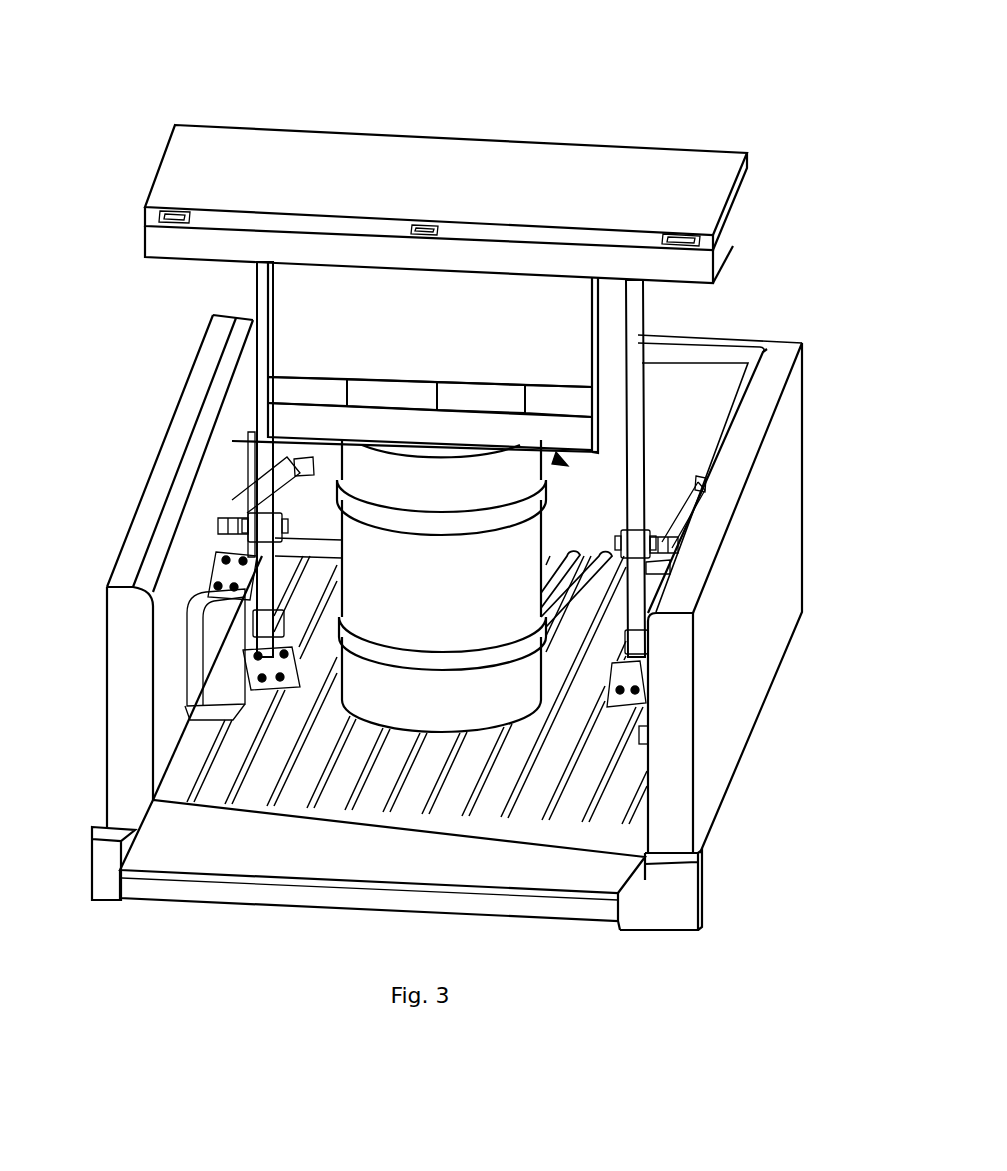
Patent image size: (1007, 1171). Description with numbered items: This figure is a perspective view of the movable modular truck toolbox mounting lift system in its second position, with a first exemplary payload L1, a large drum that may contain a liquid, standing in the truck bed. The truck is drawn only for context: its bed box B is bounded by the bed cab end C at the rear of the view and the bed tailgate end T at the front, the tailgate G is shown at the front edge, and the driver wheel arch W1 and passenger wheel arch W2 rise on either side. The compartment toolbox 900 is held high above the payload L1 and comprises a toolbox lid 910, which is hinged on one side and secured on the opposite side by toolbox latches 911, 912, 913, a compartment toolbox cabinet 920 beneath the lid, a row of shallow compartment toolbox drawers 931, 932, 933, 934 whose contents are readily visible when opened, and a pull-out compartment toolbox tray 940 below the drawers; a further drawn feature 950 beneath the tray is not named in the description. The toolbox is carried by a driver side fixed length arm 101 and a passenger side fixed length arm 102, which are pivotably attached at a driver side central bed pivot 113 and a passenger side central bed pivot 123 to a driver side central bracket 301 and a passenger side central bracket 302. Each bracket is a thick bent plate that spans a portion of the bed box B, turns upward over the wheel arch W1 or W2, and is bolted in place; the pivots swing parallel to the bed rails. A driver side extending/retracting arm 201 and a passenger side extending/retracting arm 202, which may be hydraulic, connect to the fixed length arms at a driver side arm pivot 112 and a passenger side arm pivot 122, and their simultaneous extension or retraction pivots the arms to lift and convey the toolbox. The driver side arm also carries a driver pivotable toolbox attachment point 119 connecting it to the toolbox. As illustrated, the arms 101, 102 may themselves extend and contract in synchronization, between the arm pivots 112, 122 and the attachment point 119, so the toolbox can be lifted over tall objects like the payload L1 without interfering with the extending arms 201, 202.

The compartment toolbox 900 is at (575, 140).
The toolbox lid 910 is at (333, 145).
The toolbox latch 911 is at (160, 217).
The toolbox latch 912 is at (423, 222).
The toolbox latch 913 is at (695, 240).
The compartment toolbox cabinet 920 is at (415, 358).
The compartment toolbox drawer 931 is at (295, 387).
The compartment toolbox drawer 932 is at (365, 395).
The compartment toolbox drawer 933 is at (470, 400).
The compartment toolbox drawer 934 is at (557, 405).
The compartment toolbox tray 940 is at (430, 223).
The lower bracket 950 is at (563, 462).
The driver side fixed length arm 101 is at (257, 300).
The passenger side fixed length arm 102 is at (636, 327).
The driver side arm pivot 112 is at (238, 520).
The driver side central bed pivot 113 is at (265, 628).
The driver pivotable toolbox attachment point 119 is at (296, 462).
The passenger side arm pivot 122 is at (660, 552).
The passenger side central bed pivot 123 is at (642, 634).
The driver side extending/retracting arm 201 is at (246, 512).
The passenger side extending/retracting arm 202 is at (680, 530).
The driver side central bracket 301 is at (222, 586).
The passenger side central bracket 302 is at (632, 685).
The driver wheel arch W1 is at (208, 680).
The passenger wheel arch W2 is at (650, 740).
The first exemplary payload L1 is at (474, 586).
The bed cab end C is at (538, 473).
The bed box B is at (417, 690).
The tailgate G is at (382, 865).
The bed tailgate end T is at (711, 636).